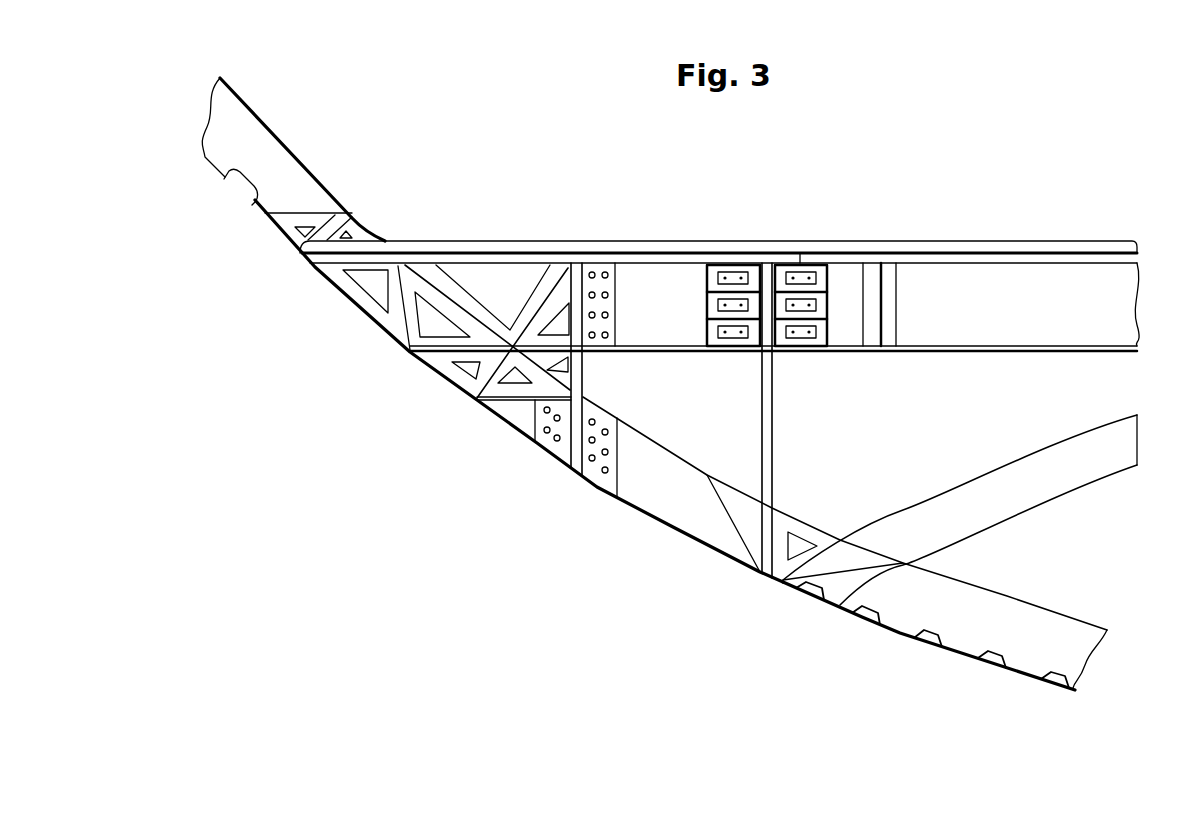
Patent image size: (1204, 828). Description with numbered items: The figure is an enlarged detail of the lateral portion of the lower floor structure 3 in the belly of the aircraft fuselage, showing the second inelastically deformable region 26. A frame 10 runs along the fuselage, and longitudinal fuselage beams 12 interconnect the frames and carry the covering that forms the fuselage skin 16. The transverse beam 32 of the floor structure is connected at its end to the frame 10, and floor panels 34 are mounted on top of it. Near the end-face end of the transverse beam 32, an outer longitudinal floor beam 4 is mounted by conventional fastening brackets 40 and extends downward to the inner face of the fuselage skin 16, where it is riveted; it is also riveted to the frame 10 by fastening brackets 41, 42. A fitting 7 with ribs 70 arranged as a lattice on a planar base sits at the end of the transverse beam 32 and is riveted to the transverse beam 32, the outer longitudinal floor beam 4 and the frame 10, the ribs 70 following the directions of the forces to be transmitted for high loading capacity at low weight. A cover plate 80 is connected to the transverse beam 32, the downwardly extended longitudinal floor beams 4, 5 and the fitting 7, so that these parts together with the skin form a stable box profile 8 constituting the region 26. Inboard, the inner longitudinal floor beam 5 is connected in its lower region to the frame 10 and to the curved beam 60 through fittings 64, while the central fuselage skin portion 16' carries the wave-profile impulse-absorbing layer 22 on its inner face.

The lower floor structure 3 is at (963, 232).
The outer longitudinal floor beam 4 is at (577, 368).
The inner downwardly extended longitudinal floor beam 5 is at (767, 400).
The fitting 7 is at (445, 362).
The box profile 8 is at (500, 438).
The frame 10 is at (268, 125).
The longitudinal fuselage beam 12 is at (252, 183).
The fuselage skin 16 is at (519, 395).
The fuselage skin portion 16' is at (929, 636).
The impulse-absorbing layer 22 is at (993, 648).
The second inelastically deformable region 26 is at (716, 562).
The transverse beam 32 is at (1120, 301).
The floor panel 34 is at (665, 241).
The fastening bracket 40 is at (613, 303).
The fastening bracket 41 is at (548, 442).
The fastening bracket 42 is at (597, 472).
The curved beam 60 is at (1067, 475).
The fitting 64 is at (805, 532).
The ribs 70 is at (483, 365).
The cover plate 80 is at (555, 262).